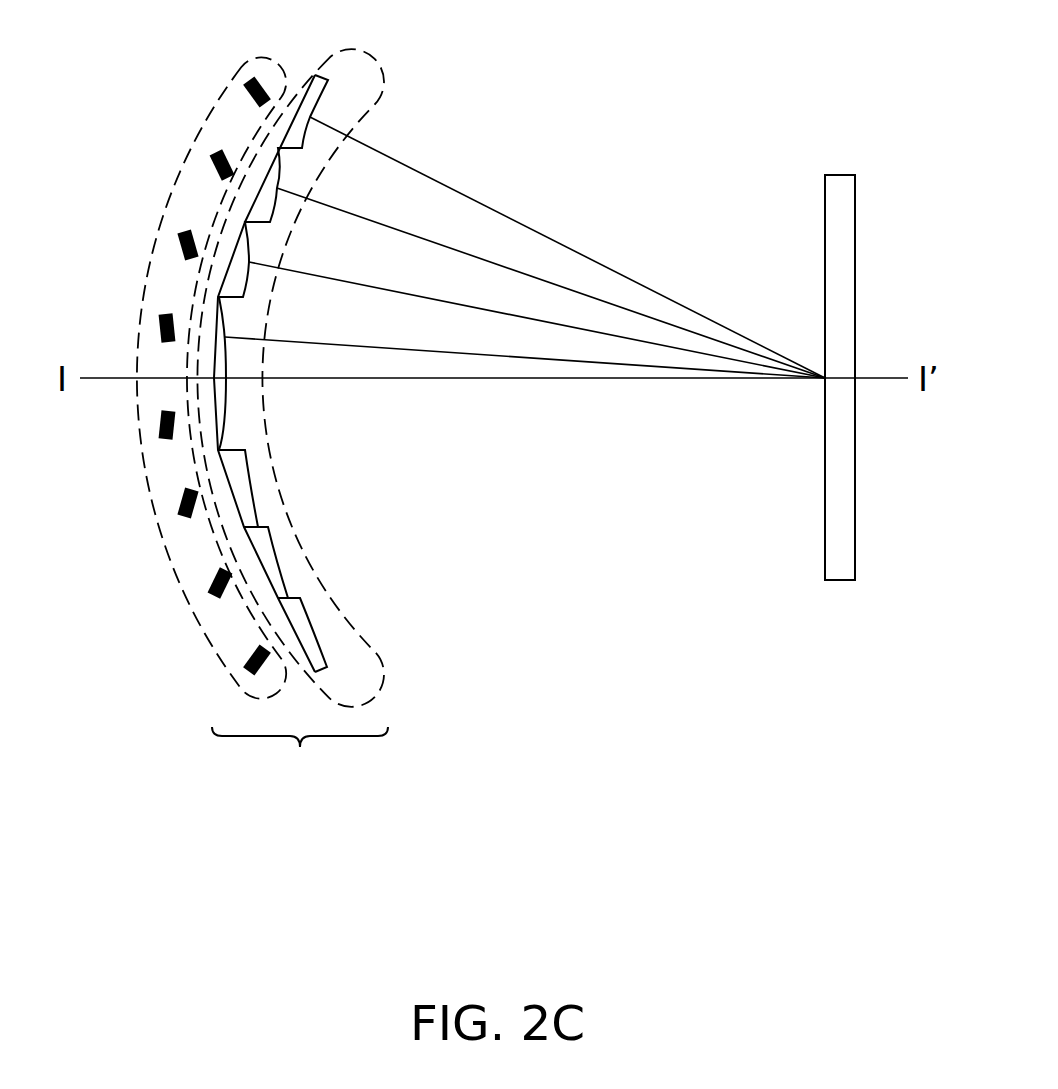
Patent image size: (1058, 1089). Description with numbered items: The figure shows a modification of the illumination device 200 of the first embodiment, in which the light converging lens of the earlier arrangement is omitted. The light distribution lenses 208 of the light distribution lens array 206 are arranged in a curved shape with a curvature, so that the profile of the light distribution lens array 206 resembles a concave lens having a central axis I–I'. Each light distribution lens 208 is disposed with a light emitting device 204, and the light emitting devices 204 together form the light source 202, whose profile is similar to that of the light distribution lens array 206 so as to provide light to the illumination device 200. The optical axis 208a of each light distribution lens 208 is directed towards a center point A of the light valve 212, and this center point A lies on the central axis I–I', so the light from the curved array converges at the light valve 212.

The illumination device 200 is at (284, 397).
The light source 202 is at (228, 78).
The light emitting device 204 is at (212, 167).
The light distribution lens array 206 is at (356, 44).
The light distribution lens 208 is at (320, 93).
The optical axis 208a is at (545, 238).
The light valve 212 is at (838, 175).
The center point A is at (820, 384).